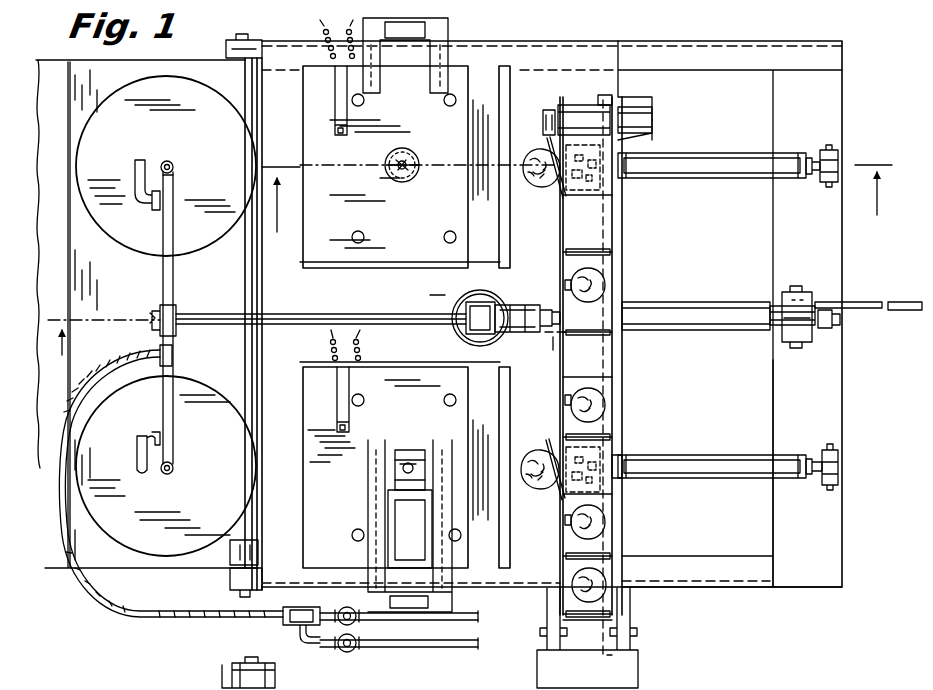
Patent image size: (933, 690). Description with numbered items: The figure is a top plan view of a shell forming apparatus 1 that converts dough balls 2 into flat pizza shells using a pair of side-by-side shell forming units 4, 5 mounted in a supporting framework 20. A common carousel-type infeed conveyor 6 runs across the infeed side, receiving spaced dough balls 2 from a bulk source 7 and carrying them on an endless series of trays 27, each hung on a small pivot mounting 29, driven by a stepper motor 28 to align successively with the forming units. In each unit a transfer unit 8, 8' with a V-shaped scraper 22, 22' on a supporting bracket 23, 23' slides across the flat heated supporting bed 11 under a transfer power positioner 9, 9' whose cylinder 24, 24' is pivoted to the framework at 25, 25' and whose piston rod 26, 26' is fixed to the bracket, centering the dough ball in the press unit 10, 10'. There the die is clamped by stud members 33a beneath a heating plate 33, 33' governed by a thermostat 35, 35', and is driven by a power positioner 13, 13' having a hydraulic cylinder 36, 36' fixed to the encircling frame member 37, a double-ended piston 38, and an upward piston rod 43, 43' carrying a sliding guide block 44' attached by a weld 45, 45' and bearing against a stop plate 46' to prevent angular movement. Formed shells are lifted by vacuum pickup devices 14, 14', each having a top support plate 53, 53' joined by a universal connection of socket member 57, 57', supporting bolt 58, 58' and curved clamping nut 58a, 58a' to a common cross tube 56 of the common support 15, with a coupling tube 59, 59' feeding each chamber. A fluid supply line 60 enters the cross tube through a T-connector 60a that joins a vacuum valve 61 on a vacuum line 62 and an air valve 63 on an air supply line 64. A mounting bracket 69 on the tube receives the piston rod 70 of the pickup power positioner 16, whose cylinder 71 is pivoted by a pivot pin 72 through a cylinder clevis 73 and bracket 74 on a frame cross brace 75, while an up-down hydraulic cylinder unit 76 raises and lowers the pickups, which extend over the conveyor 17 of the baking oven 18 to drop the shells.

The shell forming apparatus 1 is at (858, 80).
The dough balls 2 is at (658, 608).
The shell forming unit 4 is at (898, 96).
The shell forming unit 5 is at (862, 420).
The infeed conveyor 6 is at (622, 438).
The bulk source 7 is at (643, 674).
The transfer unit 8 is at (573, 376).
The transfer unit 8' is at (542, 419).
The transfer power positioner 9 is at (752, 189).
The transfer power positioner 9' is at (775, 442).
The press unit 10 is at (539, 137).
The press unit 10' is at (461, 446).
The supporting bed 11 is at (438, 285).
The power positioner 13 is at (395, 186).
The power positioner 13' is at (410, 484).
The vacuum pickup device 14 is at (166, 145).
The vacuum pickup unit 14' is at (166, 448).
The common support 15 is at (322, 312).
The power positioner 16 is at (742, 302).
The conveyor 17 is at (200, 563).
The baking oven 18 is at (55, 568).
The supporting framework 20 is at (752, 592).
The scraper 22 is at (537, 159).
The scraper 22' is at (541, 482).
The supporting bracket 23 is at (615, 174).
The supporting bracket 23' is at (625, 478).
The cylinder 24 is at (712, 147).
The cylinder 24' is at (712, 492).
The pivot 25 is at (851, 153).
The pivot 25' is at (862, 463).
The piston rod 26 is at (614, 124).
The piston rod 26' is at (653, 457).
The trays 27 is at (614, 233).
The stepper motor 28 is at (632, 108).
The pivot mounting 29 is at (559, 282).
The heating plate 33 is at (380, 167).
The heating plate 33' is at (380, 467).
The stud members 33a is at (445, 100).
The thermostat 35 is at (313, 77).
The thermostat 35' is at (318, 381).
The hydraulic cylinder 36 is at (379, 154).
The hydraulic cylinder 36' is at (410, 530).
The frame member 37 is at (448, 30).
The double-ended piston 38 is at (387, 170).
The piston rod 43 is at (420, 154).
The piston rod 43' is at (371, 457).
The sliding guide block 44' is at (377, 472).
The weld 45 is at (272, 672).
The weld 45' is at (451, 447).
The stop plate 46' is at (377, 494).
The top support plate 53 is at (400, 276).
The top support plate 53' is at (400, 354).
The cross tube 56 is at (174, 290).
The socket member 57 is at (178, 149).
The socket member 57' is at (151, 489).
The supporting bolt 58 is at (191, 313).
The supporting bolt 58' is at (208, 454).
The clamping nut 58a is at (150, 150).
The clamping nut 58a' is at (198, 495).
The coupling tube 59 is at (129, 178).
The coupling tube 59' is at (135, 449).
The fluid supply line 60 is at (136, 622).
The T-connector 60a is at (290, 626).
The vacuum valve 61 is at (355, 618).
The vacuum line 62 is at (478, 614).
The air valve 63 is at (353, 646).
The air supply line 64 is at (438, 648).
The mounting bracket 69 is at (180, 311).
The piston rod 70 is at (403, 318).
The cylinder 71 is at (736, 330).
The pivot pin 72 is at (796, 290).
The cylinder clevis 73 is at (820, 328).
The bracket 74 is at (816, 304).
The frame cross brace 75 is at (840, 387).
The up-down hydraulic cylinder unit 76 is at (500, 301).